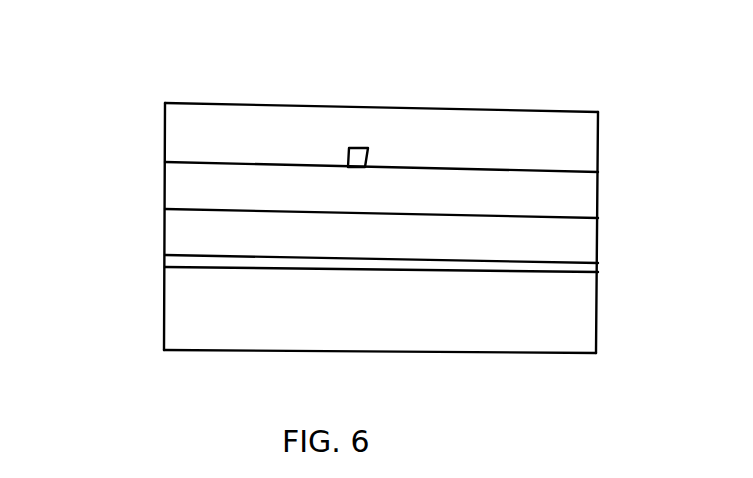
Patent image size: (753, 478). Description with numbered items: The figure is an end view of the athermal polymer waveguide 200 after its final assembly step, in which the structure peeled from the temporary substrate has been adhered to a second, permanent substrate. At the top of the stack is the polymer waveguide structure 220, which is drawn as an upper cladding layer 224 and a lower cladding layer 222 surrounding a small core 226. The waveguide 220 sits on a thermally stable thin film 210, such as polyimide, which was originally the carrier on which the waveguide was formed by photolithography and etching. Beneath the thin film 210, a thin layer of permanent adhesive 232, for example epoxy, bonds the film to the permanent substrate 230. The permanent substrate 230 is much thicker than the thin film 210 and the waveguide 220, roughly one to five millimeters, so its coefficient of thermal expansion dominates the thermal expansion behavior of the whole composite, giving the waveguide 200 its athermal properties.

The athermal polymer waveguide 200 is at (538, 67).
The upper cladding layer 224 is at (165, 130).
The lower cladding layer 222 is at (165, 195).
The core 226 is at (352, 146).
The polymer waveguide structure 220 is at (604, 110).
The thin film 210 is at (597, 245).
The permanent adhesive 232 is at (597, 271).
The permanent substrate 230 is at (597, 305).